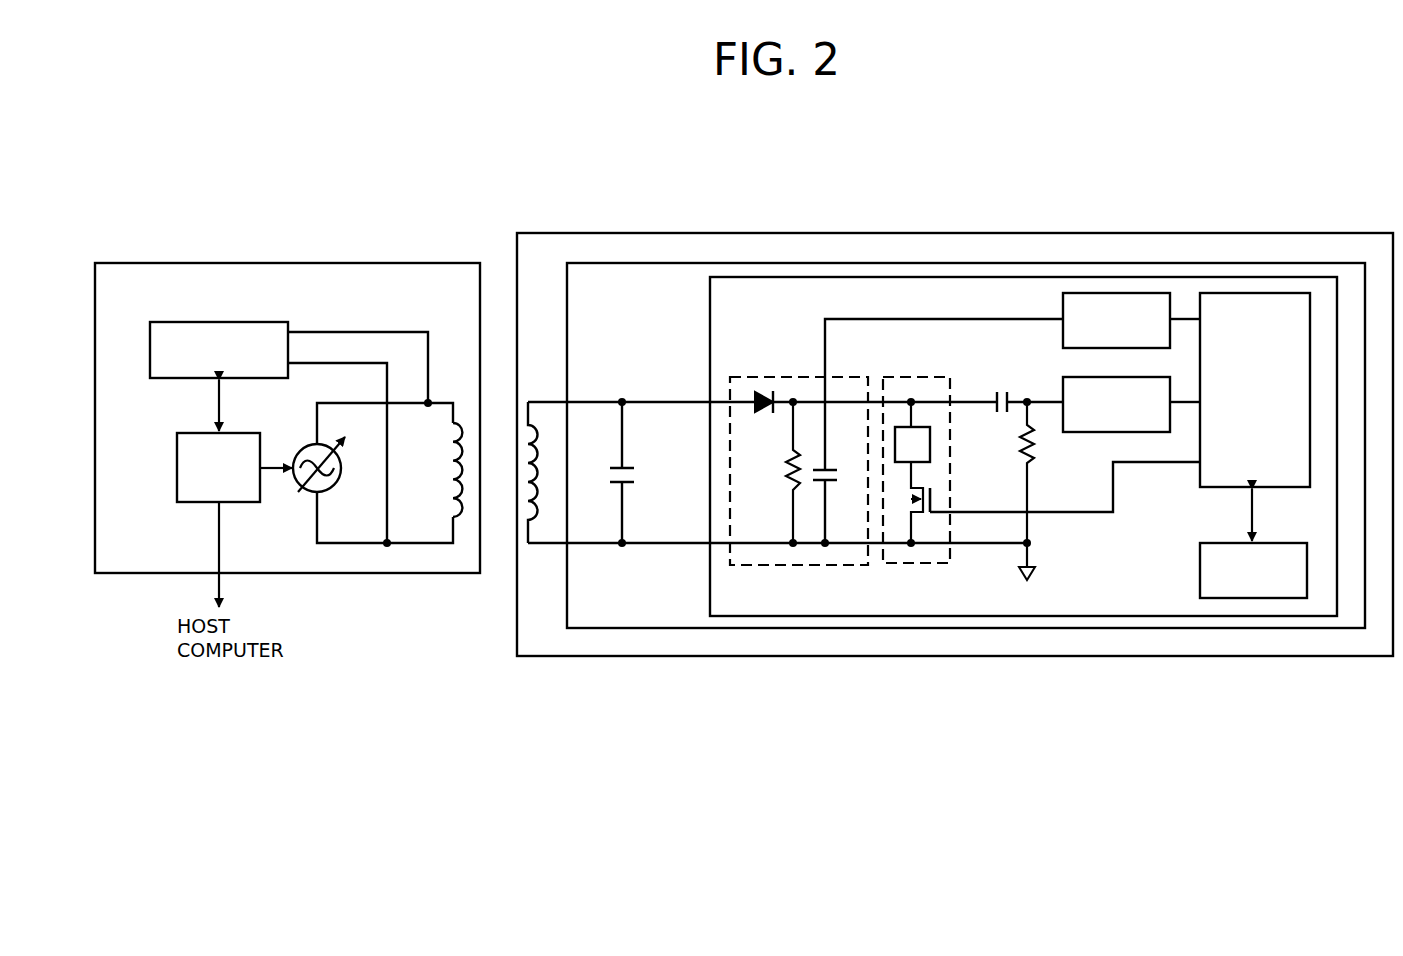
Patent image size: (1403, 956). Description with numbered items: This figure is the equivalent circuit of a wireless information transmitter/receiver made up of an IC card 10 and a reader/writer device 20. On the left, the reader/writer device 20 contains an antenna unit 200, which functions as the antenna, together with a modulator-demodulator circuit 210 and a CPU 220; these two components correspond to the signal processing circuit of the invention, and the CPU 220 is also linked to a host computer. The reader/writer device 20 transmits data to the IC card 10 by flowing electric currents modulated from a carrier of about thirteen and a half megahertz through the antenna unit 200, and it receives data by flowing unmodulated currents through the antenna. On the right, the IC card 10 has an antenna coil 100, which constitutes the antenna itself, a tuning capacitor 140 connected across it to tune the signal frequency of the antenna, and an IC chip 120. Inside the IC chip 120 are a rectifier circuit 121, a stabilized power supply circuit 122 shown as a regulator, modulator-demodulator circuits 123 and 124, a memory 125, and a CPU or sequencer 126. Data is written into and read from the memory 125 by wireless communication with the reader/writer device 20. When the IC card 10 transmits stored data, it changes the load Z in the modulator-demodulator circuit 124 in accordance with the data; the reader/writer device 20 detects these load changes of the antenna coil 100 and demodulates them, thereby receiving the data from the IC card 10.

The reader/writer device 20 is at (222, 262).
The modulator-demodulator circuit 210 is at (220, 322).
The CPU 220 is at (177, 465).
The antenna unit 200 is at (453, 480).
The IC card 10 is at (1345, 232).
The antenna coil 100 is at (538, 440).
The tuning capacitor 140 is at (633, 475).
The IC chip 120 is at (1178, 270).
The rectifier circuit 121 is at (777, 377).
The stabilized power supply circuit 122 is at (1118, 293).
The modulator-demodulator circuit 123 is at (1098, 433).
The modulator-demodulator circuit 124 is at (910, 565).
The memory 125 is at (1230, 543).
The sequencer 126 is at (1258, 293).